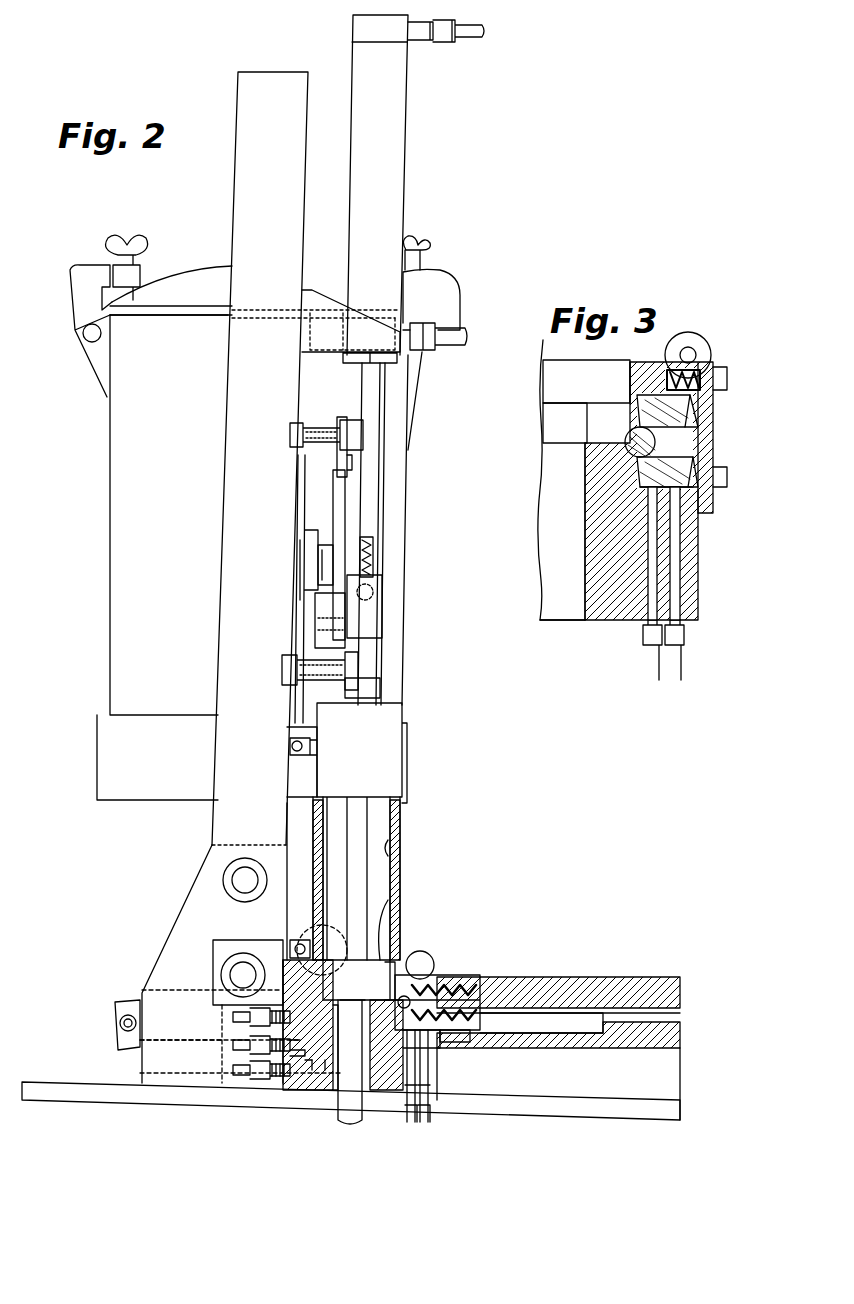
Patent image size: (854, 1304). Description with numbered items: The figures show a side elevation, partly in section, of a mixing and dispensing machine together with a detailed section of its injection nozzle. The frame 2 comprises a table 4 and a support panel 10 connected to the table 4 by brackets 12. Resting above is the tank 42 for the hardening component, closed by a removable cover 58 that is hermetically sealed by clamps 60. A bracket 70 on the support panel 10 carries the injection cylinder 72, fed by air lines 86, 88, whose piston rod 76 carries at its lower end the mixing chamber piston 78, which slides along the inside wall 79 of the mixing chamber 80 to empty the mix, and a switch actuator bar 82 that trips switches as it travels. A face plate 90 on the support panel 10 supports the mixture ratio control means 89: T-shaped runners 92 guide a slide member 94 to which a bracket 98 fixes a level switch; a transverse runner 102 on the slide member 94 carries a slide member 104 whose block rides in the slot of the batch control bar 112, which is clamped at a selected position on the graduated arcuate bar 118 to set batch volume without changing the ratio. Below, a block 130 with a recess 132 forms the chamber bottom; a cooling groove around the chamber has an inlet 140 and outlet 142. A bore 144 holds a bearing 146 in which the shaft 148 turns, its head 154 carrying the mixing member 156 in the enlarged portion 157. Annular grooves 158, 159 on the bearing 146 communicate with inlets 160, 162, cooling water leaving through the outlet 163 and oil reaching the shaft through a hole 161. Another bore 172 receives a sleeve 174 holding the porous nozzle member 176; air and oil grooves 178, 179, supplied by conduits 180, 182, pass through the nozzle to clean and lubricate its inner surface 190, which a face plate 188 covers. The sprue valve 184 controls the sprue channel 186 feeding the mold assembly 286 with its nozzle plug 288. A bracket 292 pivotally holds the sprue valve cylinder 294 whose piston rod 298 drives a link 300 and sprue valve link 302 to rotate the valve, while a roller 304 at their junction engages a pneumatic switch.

In FIG. 2, the frame 2 is at (652, 1122).
In FIG. 2, the table 4 is at (85, 1093).
In FIG. 2, the support panel 10 is at (245, 183).
In FIG. 2, the brackets 12 is at (200, 893).
In FIG. 2, the tank 42 is at (176, 531).
In FIG. 2, the removable cover 58 is at (208, 280).
In FIG. 2, the clamps 60 is at (90, 278).
In FIG. 2, the bracket 70 is at (328, 303).
In FIG. 2, the injection cylinder 72 is at (403, 88).
In FIG. 2, the piston rod 76 is at (363, 378).
In FIG. 2, the mixing chamber piston 78 is at (392, 895).
In FIG. 2, the inside wall 79 is at (395, 852).
In FIG. 2, the mixing chamber 80 is at (393, 832).
In FIG. 3, the mixing chamber 80 is at (557, 386).
In FIG. 2, the switch actuator bar 82 is at (380, 690).
In FIG. 2, the air line 86 is at (466, 27).
In FIG. 2, the air line 88 is at (462, 332).
In FIG. 2, the mixture ratio control means 89 is at (290, 546).
In FIG. 2, the face plate 90 is at (306, 425).
In FIG. 2, the T-shaped runners 92 is at (347, 462).
In FIG. 2, the slide member 94 is at (307, 540).
In FIG. 2, the bracket 98 is at (330, 610).
In FIG. 2, the T-shaped runner 102 is at (322, 568).
In FIG. 2, the slide member 104 is at (333, 544).
In FIG. 2, the batch control bar 112 is at (345, 505).
In FIG. 2, the arcuate bar 118 is at (347, 462).
In FIG. 2, the block 130 is at (430, 1078).
In FIG. 3, the block 130 is at (700, 598).
In FIG. 2, the recess 132 is at (390, 962).
In FIG. 3, the recess 132 is at (628, 385).
In FIG. 2, the inlet 140 is at (292, 748).
In FIG. 2, the outlet 142 is at (290, 955).
In FIG. 2, the bore 144 is at (345, 1092).
In FIG. 3, the bore 144 is at (580, 595).
In FIG. 2, the bearing 146 is at (372, 1092).
In FIG. 2, the shaft 148 is at (357, 1102).
In FIG. 2, the head 154 is at (385, 935).
In FIG. 2, the mixing member 156 is at (292, 950).
In FIG. 3, the enlarged portion 157 is at (605, 440).
In FIG. 2, the annular groove 158 is at (327, 1063).
In FIG. 2, the annular groove 159 is at (300, 1047).
In FIG. 2, the inlet 160 is at (310, 1060).
In FIG. 2, the hole 161 is at (313, 1063).
In FIG. 2, the inlet 162 is at (290, 1042).
In FIG. 2, the outlet 163 is at (305, 1053).
In FIG. 2, the bore 172 is at (448, 985).
In FIG. 3, the bore 172 is at (700, 408).
In FIG. 3, the sleeve 174 is at (716, 513).
In FIG. 2, the nozzle member 176 is at (437, 1042).
In FIG. 3, the nozzle member 176 is at (690, 423).
In FIG. 3, the annular groove 178 is at (647, 400).
In FIG. 3, the annular groove 179 is at (685, 482).
In FIG. 3, the conduit 180 is at (660, 525).
In FIG. 3, the conduit 182 is at (675, 555).
In FIG. 2, the sprue valve 184 is at (427, 1047).
In FIG. 2, the sprue channel 186 is at (422, 975).
In FIG. 3, the sprue channel 186 is at (608, 437).
In FIG. 3, the face plate 188 is at (705, 500).
In FIG. 3, the inner surface 190 is at (690, 470).
In FIG. 2, the mold assembly 286 is at (630, 978).
In FIG. 2, the nozzle plug 288 is at (478, 1012).
In FIG. 2, the bracket 292 is at (215, 1040).
In FIG. 2, the sprue valve cylinder 294 is at (130, 1003).
In FIG. 2, the piston rod 298 is at (300, 925).
In FIG. 2, the link 300 is at (430, 960).
In FIG. 3, the sprue valve link 302 is at (695, 345).
In FIG. 3, the roller 304 is at (705, 347).